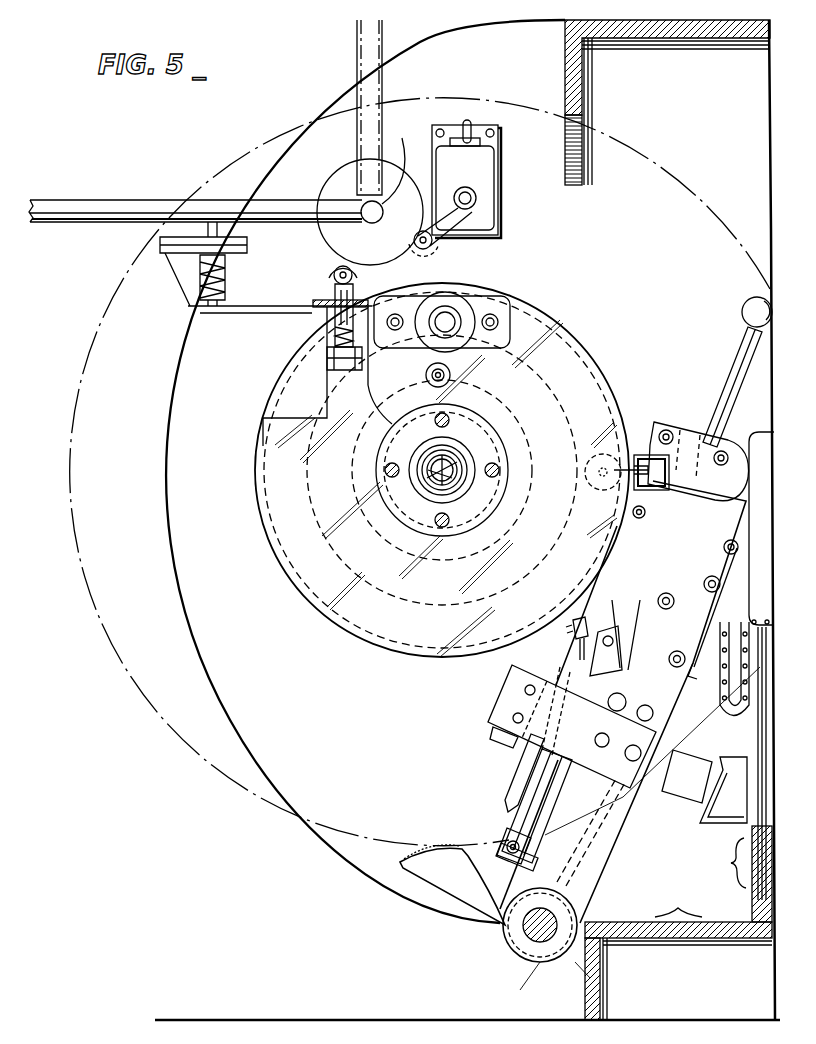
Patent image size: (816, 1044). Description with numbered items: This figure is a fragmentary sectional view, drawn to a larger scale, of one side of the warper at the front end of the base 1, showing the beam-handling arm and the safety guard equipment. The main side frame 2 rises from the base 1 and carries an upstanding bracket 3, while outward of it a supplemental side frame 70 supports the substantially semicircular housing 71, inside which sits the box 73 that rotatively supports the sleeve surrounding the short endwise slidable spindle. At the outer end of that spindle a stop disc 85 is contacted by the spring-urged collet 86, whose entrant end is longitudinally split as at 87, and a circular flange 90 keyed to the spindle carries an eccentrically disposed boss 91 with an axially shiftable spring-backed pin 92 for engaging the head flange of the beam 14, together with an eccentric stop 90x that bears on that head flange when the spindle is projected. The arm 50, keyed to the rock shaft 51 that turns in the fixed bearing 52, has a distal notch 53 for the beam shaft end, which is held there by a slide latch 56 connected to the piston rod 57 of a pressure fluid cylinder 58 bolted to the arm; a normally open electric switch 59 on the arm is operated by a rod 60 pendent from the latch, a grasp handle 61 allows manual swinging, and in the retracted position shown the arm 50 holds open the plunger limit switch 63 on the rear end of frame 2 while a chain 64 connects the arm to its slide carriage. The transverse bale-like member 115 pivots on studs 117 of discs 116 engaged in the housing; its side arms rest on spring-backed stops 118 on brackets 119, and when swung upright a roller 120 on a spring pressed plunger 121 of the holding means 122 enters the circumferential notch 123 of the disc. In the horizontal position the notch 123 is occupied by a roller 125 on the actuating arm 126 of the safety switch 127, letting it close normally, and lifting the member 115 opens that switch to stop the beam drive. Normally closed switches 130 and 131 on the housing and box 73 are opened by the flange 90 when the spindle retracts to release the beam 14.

The base 1 is at (678, 901).
The main side frame 2 is at (728, 863).
The upstanding bracket 3 is at (762, 440).
The beam 14 is at (100, 380).
The arm 50 is at (640, 803).
The rock shaft 51 is at (534, 932).
The bearing 52 is at (560, 970).
The notch 53 is at (698, 520).
The slide latch 56 is at (640, 561).
The piston rod 57 is at (600, 680).
The pressure fluid cylinder 58 is at (538, 791).
The electric switch 59 is at (500, 702).
The rod 60 is at (520, 770).
The grasp handle 61 is at (740, 355).
The plunger limit switch 63 is at (686, 793).
The chain 64 is at (720, 688).
The supplemental side frame 70 is at (566, 67).
The housing 71 is at (433, 52).
The box 73 is at (328, 418).
The stop disc 85 is at (478, 435).
The collet 86 is at (430, 476).
The split 87 is at (458, 485).
The circular flange 90 is at (560, 340).
The stop 90x is at (451, 372).
The boss 91 is at (484, 310).
The spring-backed pin 92 is at (448, 318).
The bale-like member 115 is at (78, 207).
The disc 116 is at (336, 183).
The stud 117 is at (401, 159).
The spring-backed stop 118 is at (226, 272).
The bracket 119 is at (184, 278).
The roller 120 is at (331, 279).
The spring pressed plunger 121 is at (340, 314).
The holding means 122 is at (328, 357).
The circumferential notch 123 is at (406, 233).
The roller 125 is at (422, 250).
The actuating arm 126 is at (448, 216).
The safety switch 127 is at (497, 190).
The normally closed switch 130 is at (644, 459).
The normally closed switch 131 is at (586, 480).